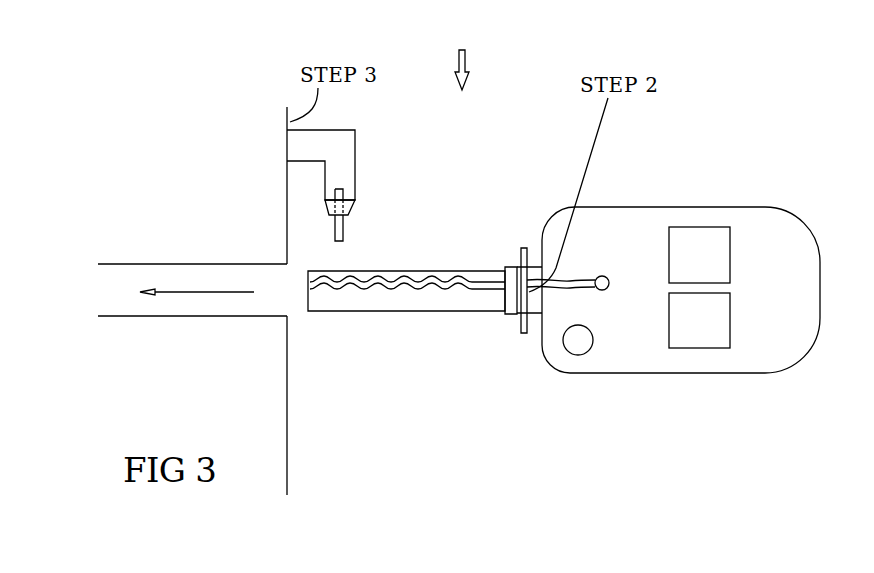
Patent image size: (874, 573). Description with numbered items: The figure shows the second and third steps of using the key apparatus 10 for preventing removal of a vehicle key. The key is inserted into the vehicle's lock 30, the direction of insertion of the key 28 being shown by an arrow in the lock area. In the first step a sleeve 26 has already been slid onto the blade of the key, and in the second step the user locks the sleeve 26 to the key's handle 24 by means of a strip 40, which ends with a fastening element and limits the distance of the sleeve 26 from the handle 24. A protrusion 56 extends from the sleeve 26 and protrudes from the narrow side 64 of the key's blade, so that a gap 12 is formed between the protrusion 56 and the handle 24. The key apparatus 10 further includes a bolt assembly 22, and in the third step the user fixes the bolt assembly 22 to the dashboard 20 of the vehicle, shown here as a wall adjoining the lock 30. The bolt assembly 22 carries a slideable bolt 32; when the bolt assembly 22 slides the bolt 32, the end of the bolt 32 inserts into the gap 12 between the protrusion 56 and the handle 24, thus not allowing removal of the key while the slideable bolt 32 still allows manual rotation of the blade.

The key apparatus 10 is at (460, 56).
The gap 12 is at (515, 316).
The dashboard 20 is at (286, 413).
The bolt assembly 22 is at (338, 147).
The key's handle 24 is at (637, 352).
The sleeve 26 is at (518, 268).
The insertion of the key 28 is at (212, 287).
The vehicle's lock 30 is at (178, 278).
The slideable bolt 32 is at (340, 225).
The strip 40 is at (575, 280).
The protrusion 56 is at (519, 300).
The narrow side of the key's blade 64 is at (457, 270).